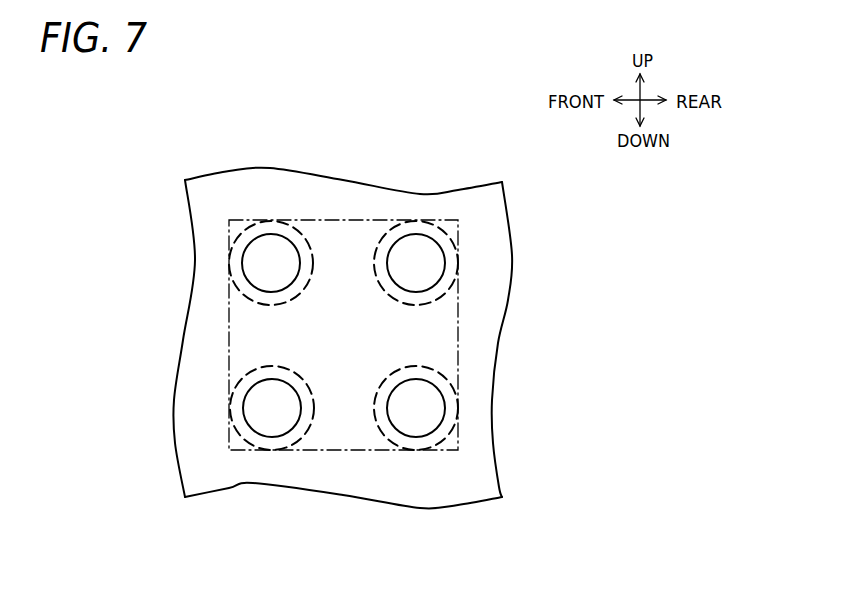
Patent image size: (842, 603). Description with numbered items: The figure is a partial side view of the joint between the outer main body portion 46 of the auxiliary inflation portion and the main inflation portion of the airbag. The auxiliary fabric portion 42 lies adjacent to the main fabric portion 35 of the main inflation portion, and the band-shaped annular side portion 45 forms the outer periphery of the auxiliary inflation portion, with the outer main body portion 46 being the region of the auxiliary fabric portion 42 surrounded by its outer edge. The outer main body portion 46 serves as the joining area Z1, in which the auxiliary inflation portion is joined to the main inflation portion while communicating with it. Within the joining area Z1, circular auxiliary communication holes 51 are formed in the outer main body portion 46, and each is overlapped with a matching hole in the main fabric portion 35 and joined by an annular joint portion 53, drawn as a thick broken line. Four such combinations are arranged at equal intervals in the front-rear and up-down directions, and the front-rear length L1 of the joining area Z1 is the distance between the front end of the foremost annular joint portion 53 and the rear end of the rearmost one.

The auxiliary fabric portion 42 is at (482, 407).
The main fabric portion 35 is at (495, 244).
The annular side portion 45 is at (506, 291).
The outer main body portion 46 is at (452, 328).
The auxiliary communication hole 51 is at (395, 275).
The annular joint portion 53 is at (248, 225).
The joining area Z1 is at (228, 352).
The front-rear length L1 is at (458, 222).